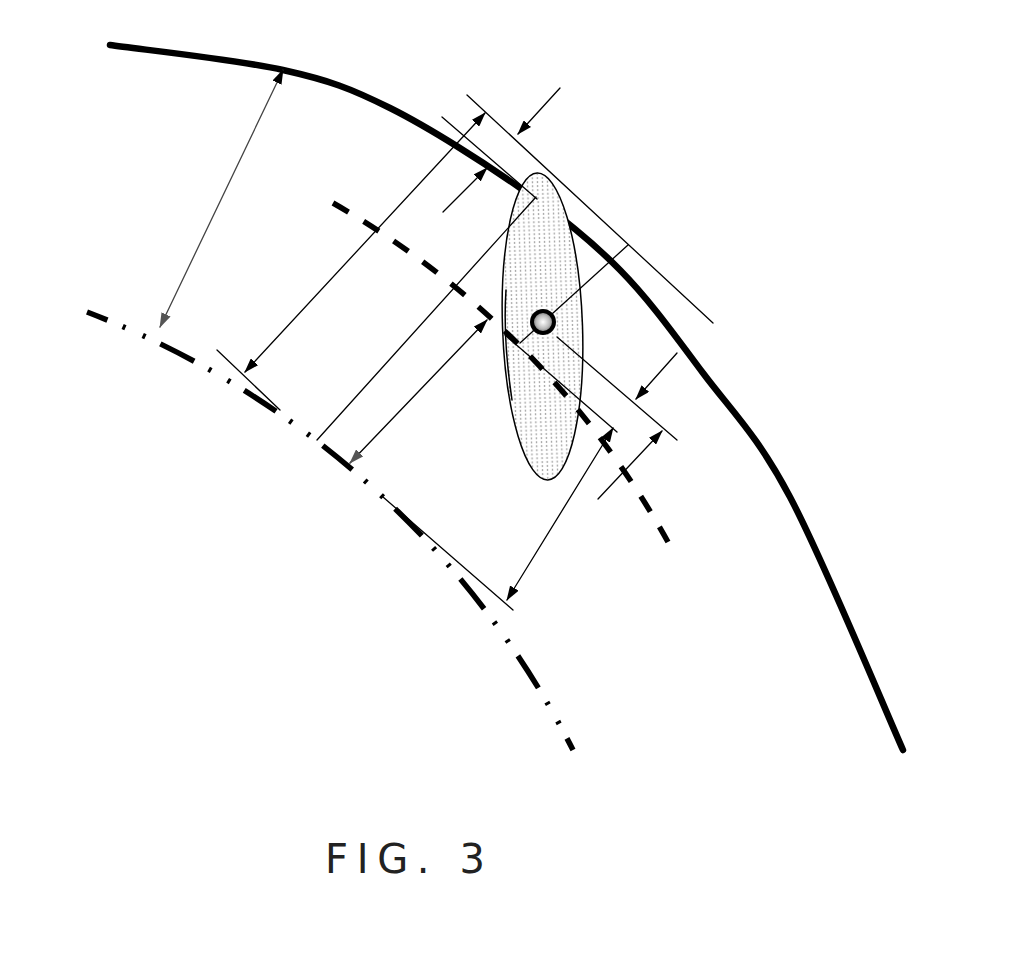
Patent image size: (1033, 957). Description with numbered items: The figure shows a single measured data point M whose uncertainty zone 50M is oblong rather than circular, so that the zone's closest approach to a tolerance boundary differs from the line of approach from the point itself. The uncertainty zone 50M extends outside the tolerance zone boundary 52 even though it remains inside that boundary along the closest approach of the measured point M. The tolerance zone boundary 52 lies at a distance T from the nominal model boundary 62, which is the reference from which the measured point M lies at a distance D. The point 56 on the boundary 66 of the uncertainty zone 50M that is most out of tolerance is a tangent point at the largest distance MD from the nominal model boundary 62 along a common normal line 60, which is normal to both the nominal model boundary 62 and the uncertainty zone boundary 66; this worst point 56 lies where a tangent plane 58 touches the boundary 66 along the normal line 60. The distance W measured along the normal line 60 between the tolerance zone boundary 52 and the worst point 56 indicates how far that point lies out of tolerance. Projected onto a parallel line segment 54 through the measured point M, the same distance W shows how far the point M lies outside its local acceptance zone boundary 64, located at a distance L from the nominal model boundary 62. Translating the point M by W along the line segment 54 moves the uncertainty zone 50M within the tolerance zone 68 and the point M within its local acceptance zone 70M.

The tolerance zone boundary 52 is at (813, 531).
The nominal model boundary 62 is at (533, 679).
The local acceptance zone boundary 64 is at (668, 528).
The uncertainty zone 50M is at (540, 480).
The uncertainty zone boundary 66 is at (510, 400).
The measured data point M is at (556, 321).
The normal line 60 is at (418, 332).
The line segment 54 is at (407, 473).
The worst point 56 is at (560, 181).
The tangent plane 58 is at (688, 297).
The tolerance distance T is at (251, 141).
The maximum distance MD is at (328, 279).
The local acceptance zone distance L is at (402, 407).
The measured point distance D is at (570, 534).
The out-of-tolerance distance W is at (548, 100).
The tolerance zone 68 is at (130, 176).
The local acceptance zone 70M is at (648, 655).